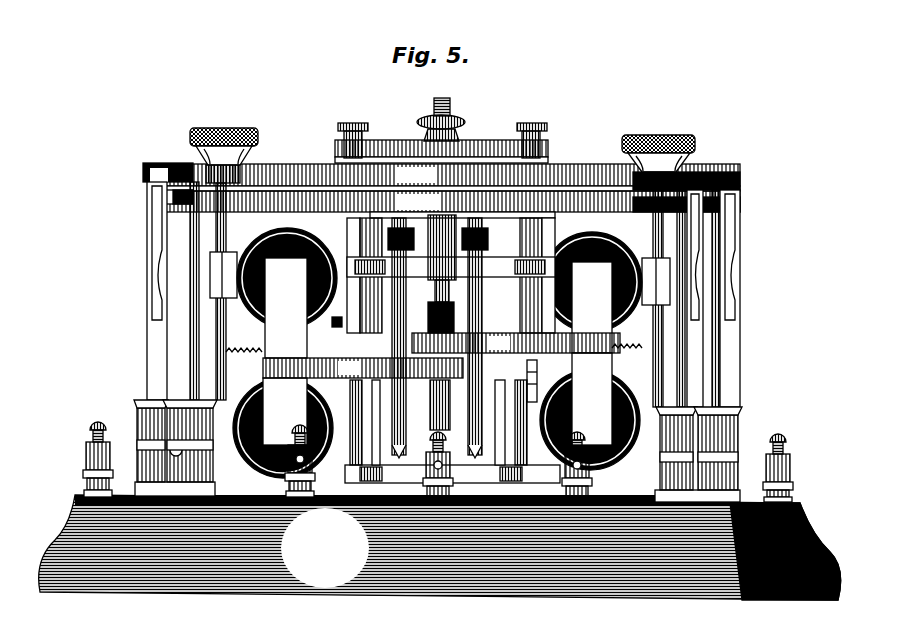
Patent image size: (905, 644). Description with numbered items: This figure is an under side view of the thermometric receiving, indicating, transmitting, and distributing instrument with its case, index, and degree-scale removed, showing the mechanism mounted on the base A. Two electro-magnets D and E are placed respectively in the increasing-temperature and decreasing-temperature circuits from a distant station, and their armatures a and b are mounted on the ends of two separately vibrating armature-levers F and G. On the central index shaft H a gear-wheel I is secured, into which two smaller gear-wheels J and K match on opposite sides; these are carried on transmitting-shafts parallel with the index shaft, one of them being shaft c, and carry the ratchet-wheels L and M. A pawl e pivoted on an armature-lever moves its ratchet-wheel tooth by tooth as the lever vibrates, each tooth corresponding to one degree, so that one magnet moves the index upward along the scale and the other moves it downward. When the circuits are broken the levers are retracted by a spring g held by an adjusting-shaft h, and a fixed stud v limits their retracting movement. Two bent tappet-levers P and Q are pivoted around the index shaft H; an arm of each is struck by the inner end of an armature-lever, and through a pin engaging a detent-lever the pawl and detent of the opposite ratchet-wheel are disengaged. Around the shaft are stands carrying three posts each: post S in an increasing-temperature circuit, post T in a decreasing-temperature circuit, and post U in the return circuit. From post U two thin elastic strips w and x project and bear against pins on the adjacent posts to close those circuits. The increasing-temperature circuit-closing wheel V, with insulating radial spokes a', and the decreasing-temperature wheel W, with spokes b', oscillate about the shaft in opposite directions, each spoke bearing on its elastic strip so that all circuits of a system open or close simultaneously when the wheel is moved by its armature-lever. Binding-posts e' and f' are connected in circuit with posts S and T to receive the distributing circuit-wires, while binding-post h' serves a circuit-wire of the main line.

The base A is at (440, 547).
The index shaft H is at (449, 110).
The gear-wheel I is at (441, 143).
The smaller gear-wheel K is at (342, 134).
The smaller gear-wheel J is at (540, 135).
The transmitting-shaft c is at (535, 125).
The increasing-temperature circuit breaking or closing wheel V is at (444, 175).
The decreasing-temperature circuit breaking or closing wheel W is at (444, 201).
The radial spokes a' is at (441, 168).
The radial spokes b' is at (449, 200).
The return-circuit post U is at (147, 356).
The circuit-closing elastic strip w is at (746, 292).
The circuit-closing elastic strip x is at (437, 233).
The adjusting-shaft h is at (441, 295).
The electro-magnet D is at (278, 348).
The electro-magnet E is at (596, 347).
The armature a is at (285, 351).
The armature b is at (592, 353).
The fixed stud v is at (432, 317).
The tappet-lever P is at (392, 338).
The tappet-lever Q is at (490, 256).
The pawl e is at (546, 227).
The ratchet-wheel M is at (334, 314).
The armature-lever G is at (516, 343).
The armature-lever F is at (363, 368).
The ratchet-wheel L is at (536, 381).
The spring g is at (434, 361).
The increasing-temperature post S is at (137, 410).
The decreasing-temperature post T is at (690, 392).
The binding-post f' is at (330, 461).
The binding-post e' is at (785, 468).
The binding-post h' is at (310, 462).